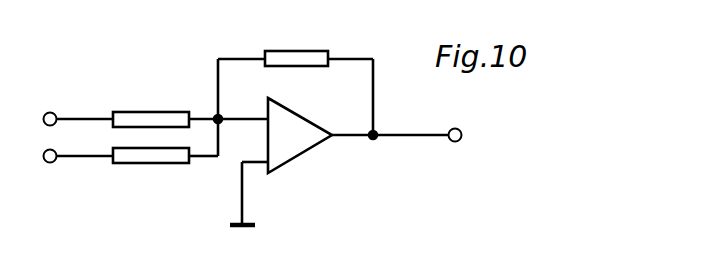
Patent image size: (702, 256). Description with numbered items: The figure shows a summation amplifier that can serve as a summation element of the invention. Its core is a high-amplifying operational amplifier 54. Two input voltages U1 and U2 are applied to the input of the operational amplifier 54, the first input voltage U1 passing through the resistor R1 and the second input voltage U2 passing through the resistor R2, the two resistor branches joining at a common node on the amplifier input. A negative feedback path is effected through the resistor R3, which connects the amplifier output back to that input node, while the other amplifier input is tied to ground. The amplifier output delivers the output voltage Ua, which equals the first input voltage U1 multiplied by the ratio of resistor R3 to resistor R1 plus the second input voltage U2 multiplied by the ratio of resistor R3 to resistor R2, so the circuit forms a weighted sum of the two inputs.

The operational amplifier 54 is at (300, 135).
The resistor R1 is at (151, 104).
The resistor R2 is at (151, 168).
The resistor R3 is at (296, 45).
The input voltage U1 is at (35, 120).
The input voltage U2 is at (35, 157).
The output voltage Ua is at (655, 141).